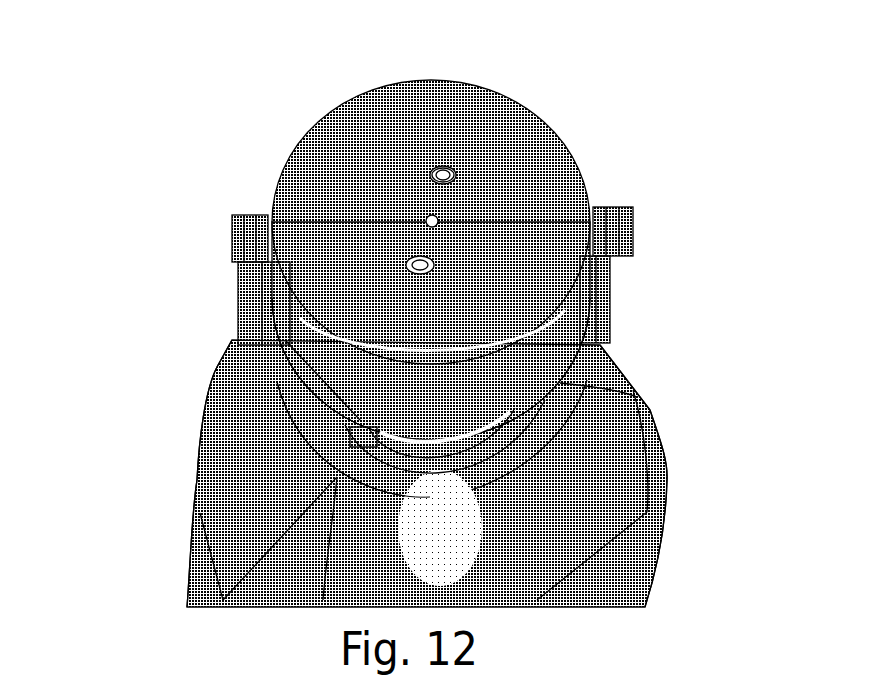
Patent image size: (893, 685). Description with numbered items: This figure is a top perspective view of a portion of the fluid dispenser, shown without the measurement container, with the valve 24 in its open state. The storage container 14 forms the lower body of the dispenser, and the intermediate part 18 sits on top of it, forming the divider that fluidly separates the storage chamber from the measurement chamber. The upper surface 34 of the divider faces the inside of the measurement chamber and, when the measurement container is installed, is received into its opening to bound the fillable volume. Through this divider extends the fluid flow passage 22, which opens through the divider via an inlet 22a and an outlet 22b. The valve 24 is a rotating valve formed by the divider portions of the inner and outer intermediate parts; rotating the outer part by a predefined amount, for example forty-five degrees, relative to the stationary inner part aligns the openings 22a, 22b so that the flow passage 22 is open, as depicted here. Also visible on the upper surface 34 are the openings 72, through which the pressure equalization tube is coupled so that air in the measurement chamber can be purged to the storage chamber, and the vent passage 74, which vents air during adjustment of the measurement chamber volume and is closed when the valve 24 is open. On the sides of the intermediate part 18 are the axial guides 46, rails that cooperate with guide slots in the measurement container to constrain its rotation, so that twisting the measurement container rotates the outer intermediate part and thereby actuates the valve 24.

The storage container 14 is at (656, 391).
The intermediate part 18 is at (160, 58).
The fluid flow passage 22 is at (422, 266).
The inlet 22a is at (441, 173).
The outlet 22b is at (441, 168).
The valve 24 is at (302, 175).
The upper surface 34 is at (543, 190).
The axial guides 46 is at (240, 290).
The openings 72 is at (432, 222).
The vent passage 74 is at (408, 328).